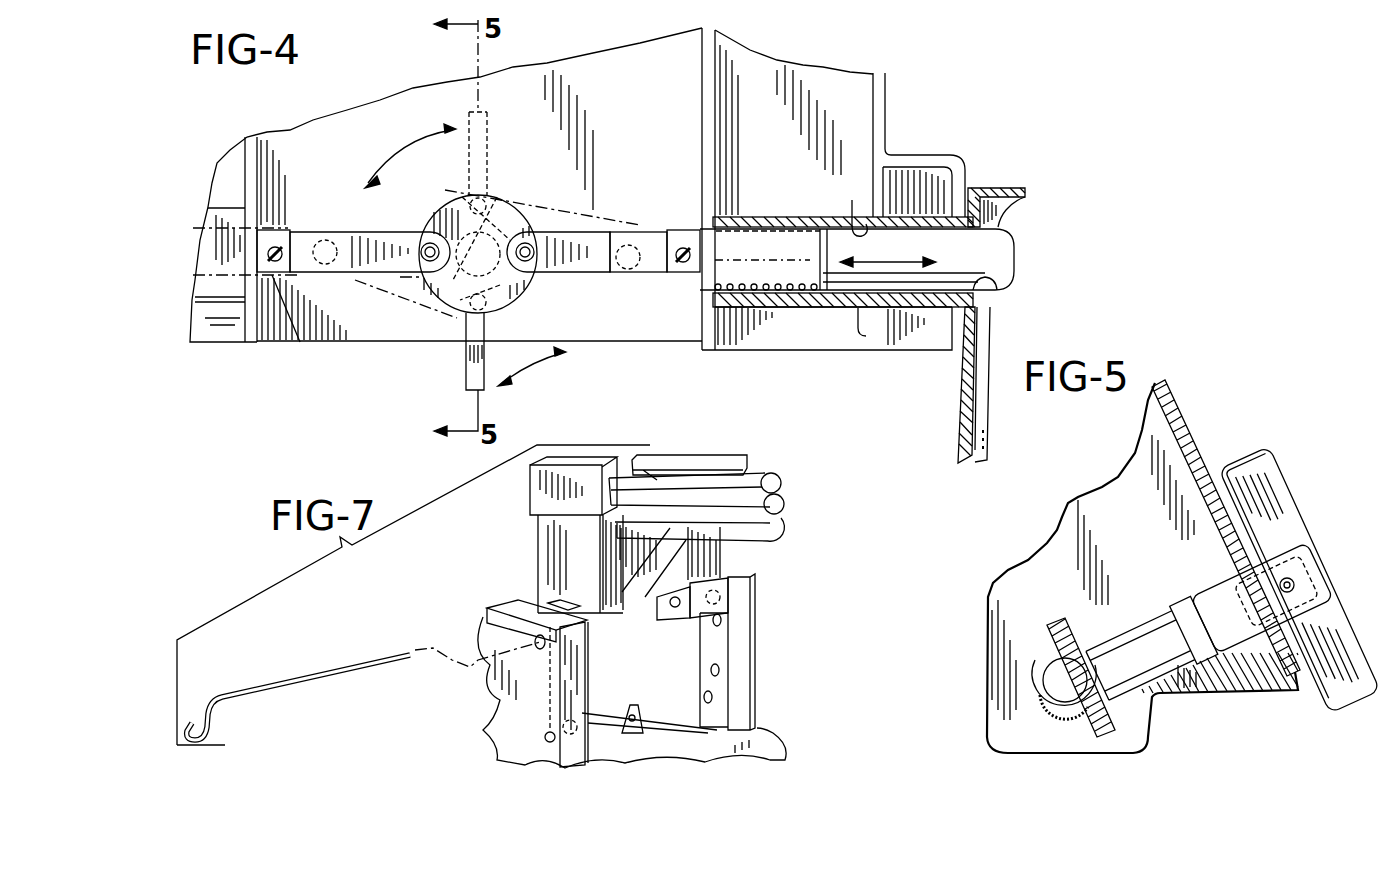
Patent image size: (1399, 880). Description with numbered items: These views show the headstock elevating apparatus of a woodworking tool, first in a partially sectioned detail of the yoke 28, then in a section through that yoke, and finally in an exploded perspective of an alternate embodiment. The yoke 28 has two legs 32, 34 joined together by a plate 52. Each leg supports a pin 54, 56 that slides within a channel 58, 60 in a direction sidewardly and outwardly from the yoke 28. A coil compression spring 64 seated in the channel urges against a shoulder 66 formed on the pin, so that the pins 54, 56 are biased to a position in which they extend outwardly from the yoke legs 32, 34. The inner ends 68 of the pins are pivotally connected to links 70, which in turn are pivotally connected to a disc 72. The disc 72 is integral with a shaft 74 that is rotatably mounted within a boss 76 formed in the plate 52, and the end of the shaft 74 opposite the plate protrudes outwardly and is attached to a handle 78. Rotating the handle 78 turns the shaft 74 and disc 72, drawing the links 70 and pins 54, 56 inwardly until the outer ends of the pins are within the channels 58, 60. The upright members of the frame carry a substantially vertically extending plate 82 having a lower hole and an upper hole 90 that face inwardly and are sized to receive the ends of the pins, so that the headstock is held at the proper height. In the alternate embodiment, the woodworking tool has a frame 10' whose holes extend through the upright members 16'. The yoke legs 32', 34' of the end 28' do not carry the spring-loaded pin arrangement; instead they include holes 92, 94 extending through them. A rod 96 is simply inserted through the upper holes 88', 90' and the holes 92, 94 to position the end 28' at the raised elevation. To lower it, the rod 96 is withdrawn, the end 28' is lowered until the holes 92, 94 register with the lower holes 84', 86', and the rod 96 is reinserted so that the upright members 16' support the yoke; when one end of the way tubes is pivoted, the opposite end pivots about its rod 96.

In FIG. 7, the frame 10' is at (505, 595).
In FIG. 7, the upright members 16' is at (640, 593).
In FIG. 4, the yoke 28 is at (922, 135).
In FIG. 7, the end 28' is at (689, 443).
In FIG. 4, the yoke leg 32 is at (220, 300).
In FIG. 5, the yoke leg 32 is at (1142, 568).
In FIG. 7, the yoke leg 32' is at (632, 692).
In FIG. 4, the yoke leg 34 is at (827, 346).
In FIG. 7, the yoke leg 34' is at (710, 525).
In FIG. 4, the plate 52 is at (663, 91).
In FIG. 5, the plate 52 is at (1168, 413).
In FIG. 4, the pin 54 is at (297, 290).
In FIG. 4, the pin 56 is at (998, 250).
In FIG. 4, the channel 58 is at (283, 192).
In FIG. 4, the channel 60 is at (856, 205).
In FIG. 4, the coil compression spring 64 is at (760, 227).
In FIG. 4, the shoulder 66 is at (795, 272).
In FIG. 4, the inner ends 68 is at (283, 235).
In FIG. 4, the links 70 is at (375, 272).
In FIG. 4, the disc 72 is at (508, 294).
In FIG. 5, the disc 72 is at (1065, 633).
In FIG. 5, the shaft 74 is at (1138, 633).
In FIG. 5, the boss 76 is at (1218, 587).
In FIG. 4, the handle 78 is at (467, 372).
In FIG. 5, the handle 78 is at (1268, 470).
In FIG. 4, the plate 82 is at (960, 385).
In FIG. 7, the hole 84' is at (527, 738).
In FIG. 7, the hole 86' is at (755, 683).
In FIG. 7, the hole 88' is at (501, 678).
In FIG. 4, the upper hole 90 is at (1019, 292).
In FIG. 7, the hole 90' is at (757, 621).
In FIG. 7, the hole 92 is at (601, 640).
In FIG. 7, the hole 94 is at (674, 608).
In FIG. 7, the rod 96 is at (327, 673).